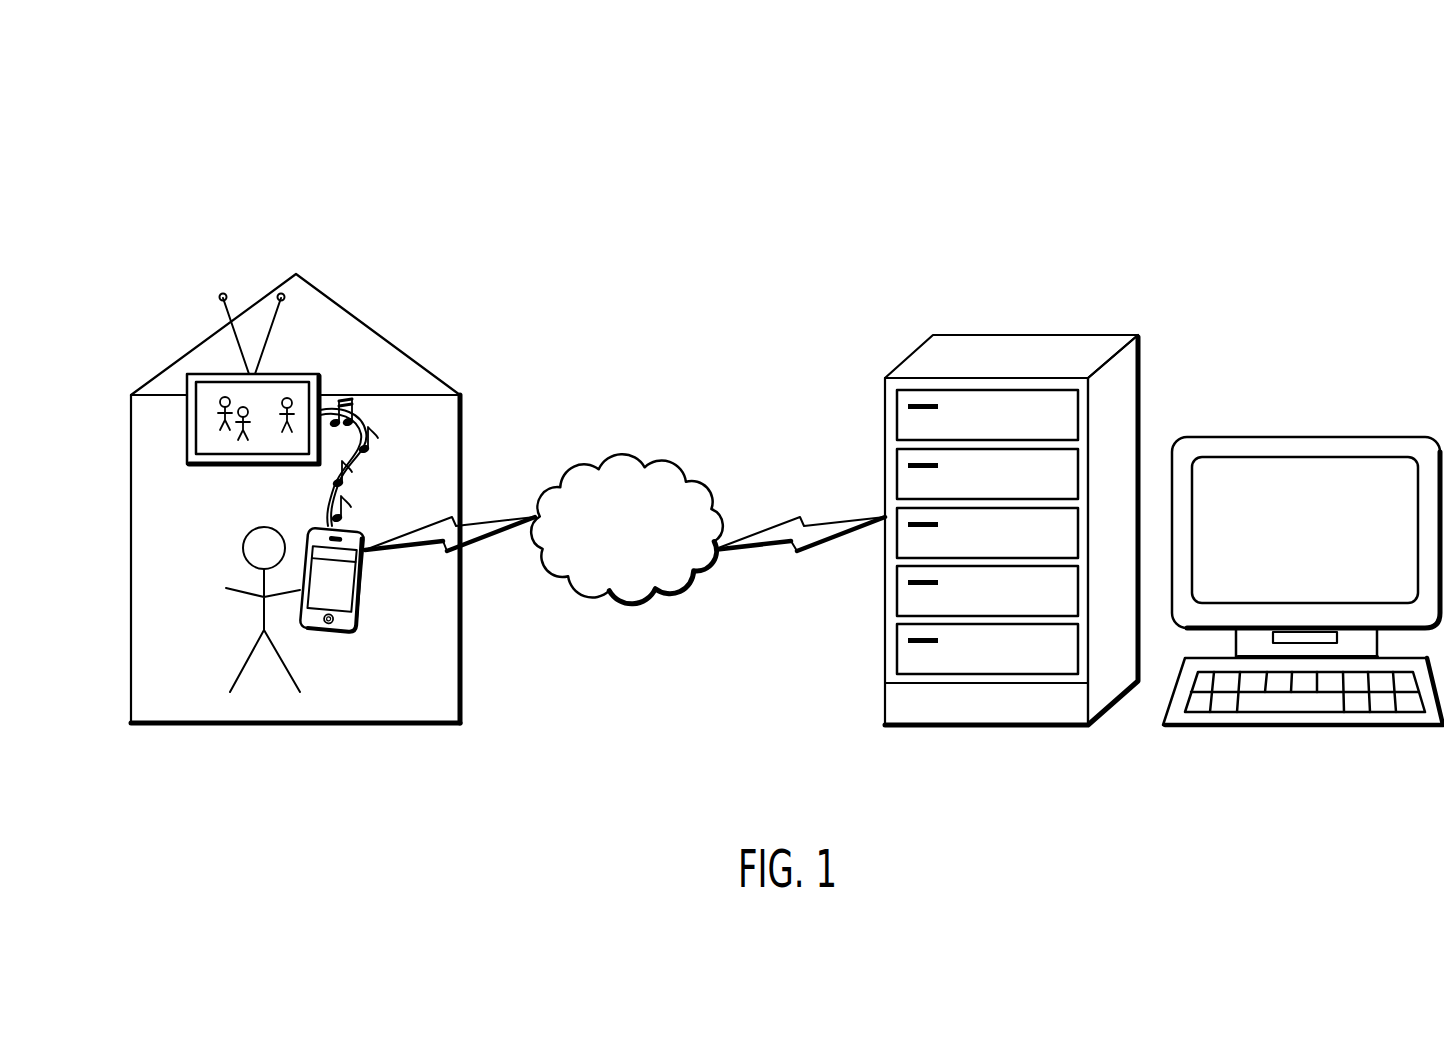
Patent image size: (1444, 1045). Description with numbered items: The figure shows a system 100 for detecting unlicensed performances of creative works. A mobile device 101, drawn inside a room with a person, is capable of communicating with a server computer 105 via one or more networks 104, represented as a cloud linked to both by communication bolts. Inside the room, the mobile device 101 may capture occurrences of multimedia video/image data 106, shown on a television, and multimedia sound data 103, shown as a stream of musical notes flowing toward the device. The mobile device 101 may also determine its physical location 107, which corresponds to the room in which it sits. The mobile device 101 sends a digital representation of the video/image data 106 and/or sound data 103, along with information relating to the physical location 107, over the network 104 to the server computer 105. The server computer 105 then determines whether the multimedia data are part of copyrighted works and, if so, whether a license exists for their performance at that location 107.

The system 100 is at (196, 144).
The mobile device 101 is at (337, 632).
The multimedia sound data 103 is at (350, 471).
The network 104 is at (606, 462).
The server computer 105 is at (1016, 333).
The multimedia video/image data 106 is at (196, 420).
The physical location 107 is at (180, 643).